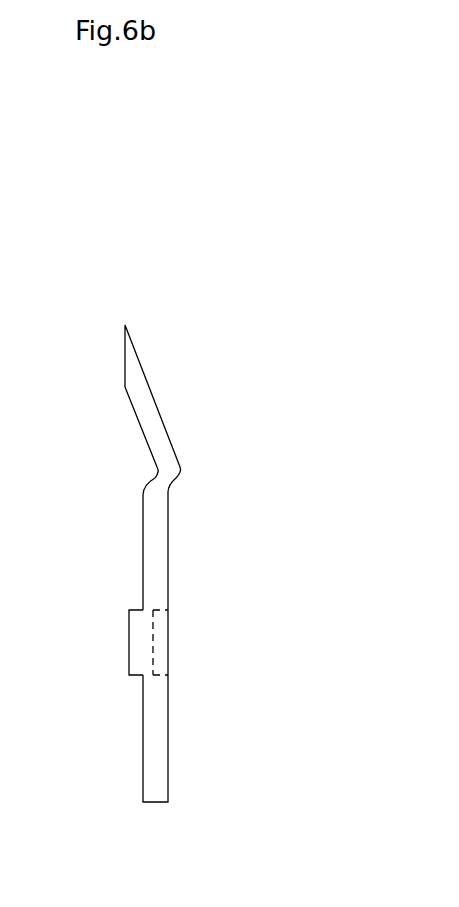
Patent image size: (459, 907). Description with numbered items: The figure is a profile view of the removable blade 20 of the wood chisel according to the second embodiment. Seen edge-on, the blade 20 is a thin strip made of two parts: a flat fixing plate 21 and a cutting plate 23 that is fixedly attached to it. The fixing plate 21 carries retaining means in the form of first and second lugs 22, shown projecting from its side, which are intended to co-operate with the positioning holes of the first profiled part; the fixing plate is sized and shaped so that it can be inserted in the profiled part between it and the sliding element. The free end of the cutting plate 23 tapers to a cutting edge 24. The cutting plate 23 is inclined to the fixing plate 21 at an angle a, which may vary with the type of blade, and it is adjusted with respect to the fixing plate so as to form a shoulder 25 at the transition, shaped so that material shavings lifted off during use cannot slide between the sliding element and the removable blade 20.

The removable blade 20 is at (188, 259).
The fixing plate 21 is at (153, 787).
The lug 22 is at (137, 639).
The cutting plate 23 is at (152, 412).
The cutting edge 24 is at (129, 350).
The shoulder 25 is at (180, 478).
The angle a is at (155, 466).